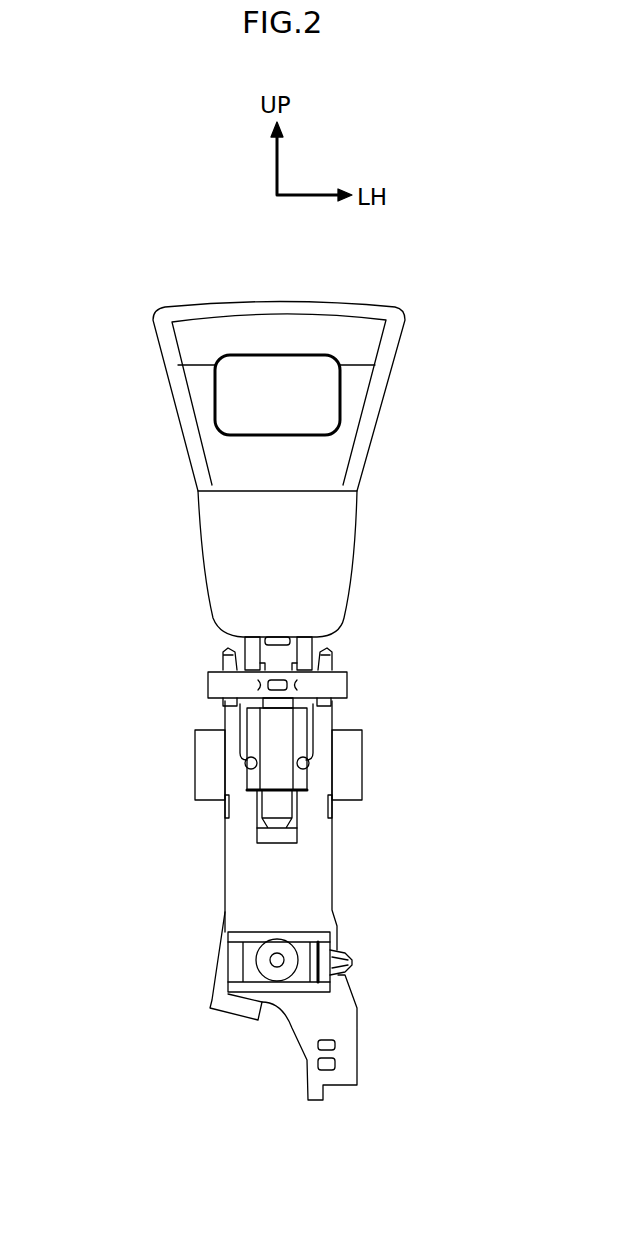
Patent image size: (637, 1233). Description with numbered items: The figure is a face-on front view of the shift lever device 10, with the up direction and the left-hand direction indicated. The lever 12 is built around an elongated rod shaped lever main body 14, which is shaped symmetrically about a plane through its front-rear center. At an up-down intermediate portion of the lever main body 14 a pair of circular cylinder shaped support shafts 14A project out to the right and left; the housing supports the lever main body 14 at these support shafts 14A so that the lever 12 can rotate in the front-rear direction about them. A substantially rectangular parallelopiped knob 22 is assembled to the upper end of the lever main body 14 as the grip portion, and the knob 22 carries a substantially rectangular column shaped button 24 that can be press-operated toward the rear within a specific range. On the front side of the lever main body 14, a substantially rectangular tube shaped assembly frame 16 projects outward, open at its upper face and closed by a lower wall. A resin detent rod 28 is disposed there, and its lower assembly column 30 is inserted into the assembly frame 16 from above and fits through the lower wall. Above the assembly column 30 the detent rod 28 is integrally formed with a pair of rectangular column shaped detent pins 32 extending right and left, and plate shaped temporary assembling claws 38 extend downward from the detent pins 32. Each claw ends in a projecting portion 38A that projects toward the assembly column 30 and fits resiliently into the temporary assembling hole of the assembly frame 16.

The shift lever device 10 is at (97, 256).
The lever 12 is at (395, 317).
The lever main body 14 is at (225, 886).
The support shafts 14A is at (242, 733).
The assembly frame 16 is at (273, 774).
The knob 22 is at (180, 313).
The button 24 is at (238, 398).
The detent rod 28 is at (255, 656).
The assembly column 30 is at (295, 825).
The detent pins 32 is at (208, 683).
The temporary assembling claws 38 is at (225, 737).
The projecting portion 38A is at (245, 768).